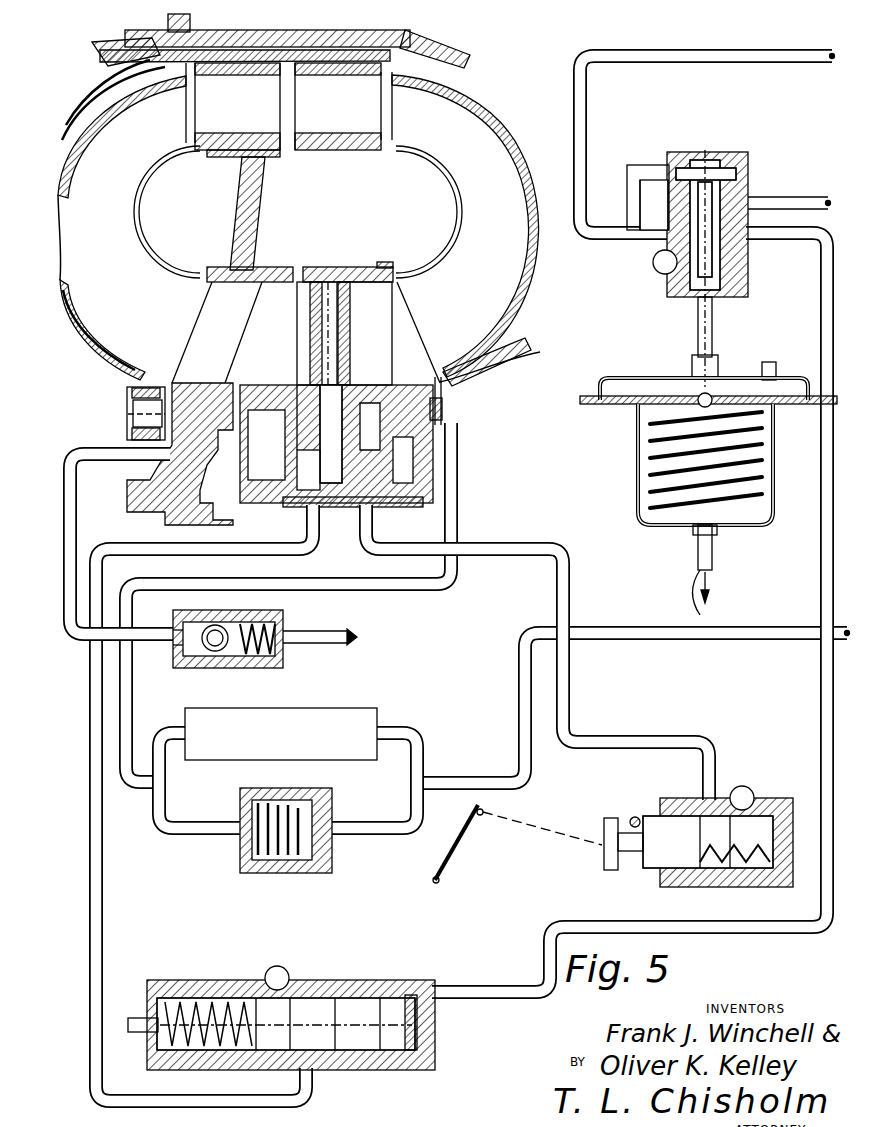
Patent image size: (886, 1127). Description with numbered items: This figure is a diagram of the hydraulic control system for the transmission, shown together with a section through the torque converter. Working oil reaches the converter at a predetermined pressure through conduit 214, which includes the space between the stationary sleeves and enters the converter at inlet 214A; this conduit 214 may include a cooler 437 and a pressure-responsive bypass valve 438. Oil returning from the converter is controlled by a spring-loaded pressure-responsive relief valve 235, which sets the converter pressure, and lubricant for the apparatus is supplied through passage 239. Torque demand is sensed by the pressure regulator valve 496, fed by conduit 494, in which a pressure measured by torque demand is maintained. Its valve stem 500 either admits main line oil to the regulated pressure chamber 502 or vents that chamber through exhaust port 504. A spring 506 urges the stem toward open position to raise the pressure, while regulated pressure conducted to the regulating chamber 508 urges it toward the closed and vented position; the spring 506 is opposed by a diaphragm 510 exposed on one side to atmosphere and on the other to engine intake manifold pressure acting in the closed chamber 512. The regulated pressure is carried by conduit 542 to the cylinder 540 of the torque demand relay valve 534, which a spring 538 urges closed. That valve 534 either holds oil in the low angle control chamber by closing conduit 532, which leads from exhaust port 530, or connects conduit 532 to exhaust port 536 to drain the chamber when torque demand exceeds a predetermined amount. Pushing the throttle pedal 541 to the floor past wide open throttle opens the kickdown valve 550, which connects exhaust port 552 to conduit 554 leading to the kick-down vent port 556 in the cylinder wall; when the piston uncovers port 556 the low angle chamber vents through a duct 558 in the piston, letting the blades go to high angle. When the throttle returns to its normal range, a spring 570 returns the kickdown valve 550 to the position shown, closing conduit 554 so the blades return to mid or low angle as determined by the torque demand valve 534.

The conduit 494 is at (736, 58).
The pressure regulator valve 496 is at (720, 266).
The regulated pressure chamber 502 is at (758, 222).
The valve stem 500 is at (738, 232).
The regulating chamber 508 is at (684, 170).
The exhaust port 504 is at (654, 272).
The diaphragm 510 is at (622, 397).
The spring 506 is at (756, 468).
The closed chamber 512 is at (708, 459).
The conduit 214 is at (459, 489).
The inlet 214A is at (448, 420).
The exhaust port 530 is at (286, 491).
The kick-down vent port 556 is at (360, 512).
The duct 558 is at (373, 510).
The relief valve 235 is at (290, 622).
The passage 239 is at (340, 633).
The cooler 437 is at (338, 723).
The bypass valve 438 is at (333, 860).
The conduit 554 is at (678, 742).
The exhaust port 552 is at (760, 770).
The kickdown valve 550 is at (622, 833).
The throttle pedal 541 is at (462, 850).
The spring 570 is at (760, 884).
The conduit 532 is at (106, 920).
The exhaust port 536 is at (300, 948).
The spring 538 is at (218, 998).
The torque demand relay valve 534 is at (297, 1025).
The cylinder 540 is at (410, 995).
The conduit 542 is at (478, 997).